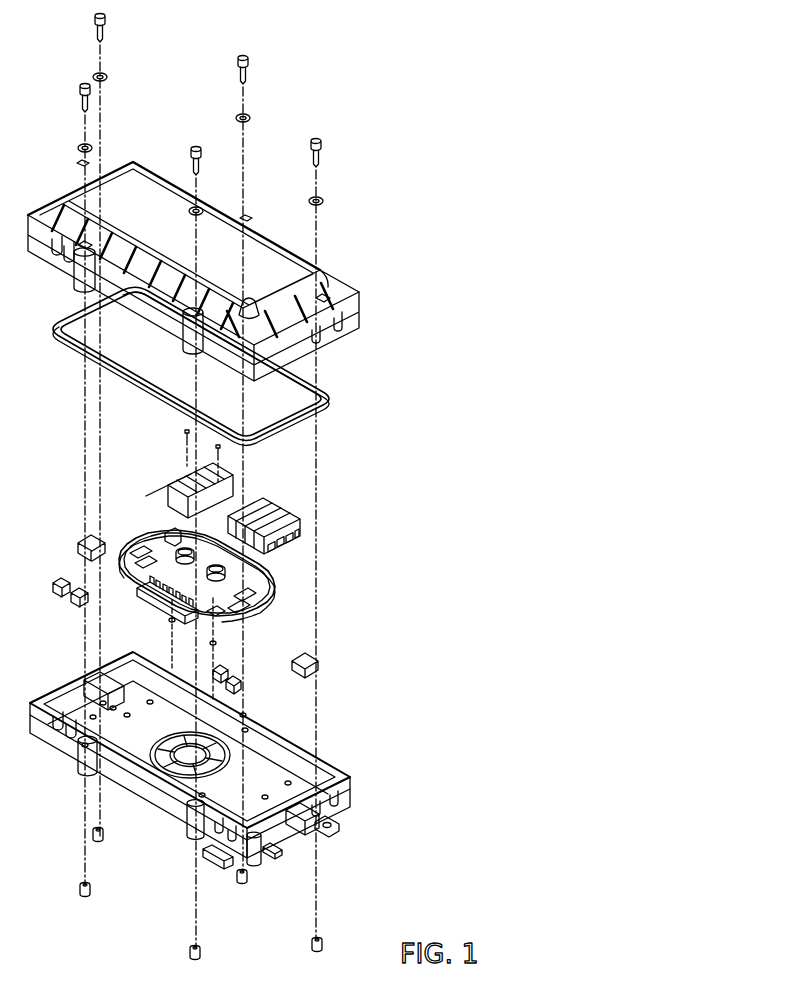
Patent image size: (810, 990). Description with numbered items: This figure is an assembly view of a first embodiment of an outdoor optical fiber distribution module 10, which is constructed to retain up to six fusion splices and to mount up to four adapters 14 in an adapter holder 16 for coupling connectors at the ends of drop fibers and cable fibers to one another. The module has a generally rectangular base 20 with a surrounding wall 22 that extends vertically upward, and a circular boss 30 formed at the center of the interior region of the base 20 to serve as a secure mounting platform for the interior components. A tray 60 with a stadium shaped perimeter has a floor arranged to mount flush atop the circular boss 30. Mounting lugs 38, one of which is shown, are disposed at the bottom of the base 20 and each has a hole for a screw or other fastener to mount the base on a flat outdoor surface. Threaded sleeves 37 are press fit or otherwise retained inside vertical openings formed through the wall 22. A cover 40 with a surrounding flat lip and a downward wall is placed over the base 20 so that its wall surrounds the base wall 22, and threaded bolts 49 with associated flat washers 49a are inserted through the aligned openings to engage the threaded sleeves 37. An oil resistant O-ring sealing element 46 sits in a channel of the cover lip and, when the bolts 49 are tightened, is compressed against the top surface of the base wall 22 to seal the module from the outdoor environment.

The outdoor optical fiber distribution module 10 is at (457, 455).
The adapters 14 is at (285, 512).
The adapter holder 16 is at (168, 497).
The base 20 is at (338, 778).
The wall 22 is at (145, 793).
The circular boss 30 is at (228, 758).
The threaded sleeves 37 is at (92, 893).
The mounting lugs 38 is at (330, 836).
The cover 40 is at (142, 175).
The O-ring sealing element 46 is at (330, 405).
The threaded bolts 49 is at (235, 75).
The flat washers 49a is at (323, 205).
The tray 60 is at (268, 604).